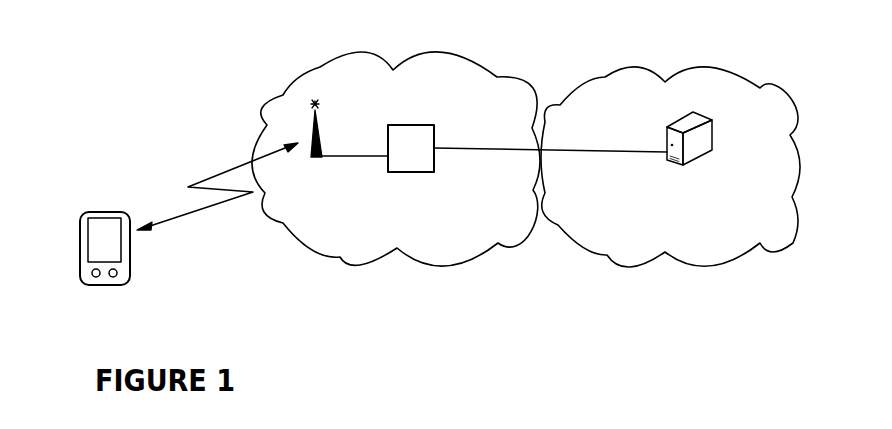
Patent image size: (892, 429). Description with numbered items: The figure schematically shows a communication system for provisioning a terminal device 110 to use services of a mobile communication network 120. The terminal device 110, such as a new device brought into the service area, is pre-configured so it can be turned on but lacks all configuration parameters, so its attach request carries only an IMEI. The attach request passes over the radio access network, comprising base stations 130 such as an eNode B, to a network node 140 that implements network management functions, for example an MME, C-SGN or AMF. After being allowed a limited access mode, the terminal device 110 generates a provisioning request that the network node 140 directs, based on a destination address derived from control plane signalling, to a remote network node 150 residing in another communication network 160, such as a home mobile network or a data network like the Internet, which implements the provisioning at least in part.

The terminal device 110 is at (104, 212).
The mobile communication network 120 is at (315, 70).
The base station 130 is at (318, 158).
The network node 140 is at (420, 172).
The remote network node 150 is at (702, 157).
The another communication network 160 is at (733, 263).